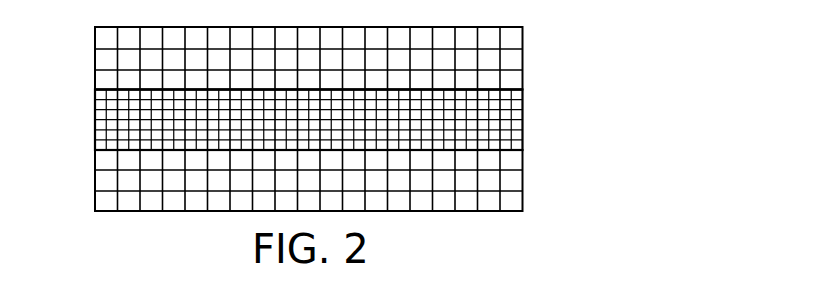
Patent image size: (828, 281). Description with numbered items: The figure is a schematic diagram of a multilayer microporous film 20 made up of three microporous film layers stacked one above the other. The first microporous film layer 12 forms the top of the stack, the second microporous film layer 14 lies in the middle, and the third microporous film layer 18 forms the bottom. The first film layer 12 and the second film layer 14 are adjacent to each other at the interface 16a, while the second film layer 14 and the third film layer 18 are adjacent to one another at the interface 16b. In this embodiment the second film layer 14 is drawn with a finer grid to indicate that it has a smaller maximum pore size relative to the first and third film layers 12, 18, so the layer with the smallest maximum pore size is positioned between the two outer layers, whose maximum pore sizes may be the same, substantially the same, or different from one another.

The first microporous film layer 12 is at (513, 62).
The second microporous film layer 14 is at (513, 127).
The interface 16a is at (127, 90).
The interface 16b is at (127, 150).
The third microporous film layer 18 is at (513, 182).
The multilayer microporous film 20 is at (364, 119).